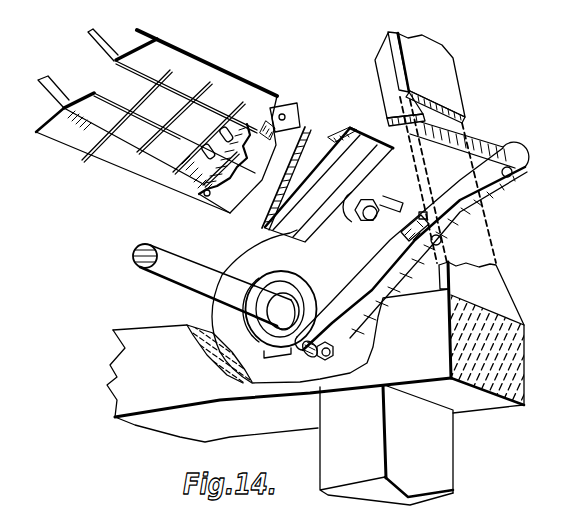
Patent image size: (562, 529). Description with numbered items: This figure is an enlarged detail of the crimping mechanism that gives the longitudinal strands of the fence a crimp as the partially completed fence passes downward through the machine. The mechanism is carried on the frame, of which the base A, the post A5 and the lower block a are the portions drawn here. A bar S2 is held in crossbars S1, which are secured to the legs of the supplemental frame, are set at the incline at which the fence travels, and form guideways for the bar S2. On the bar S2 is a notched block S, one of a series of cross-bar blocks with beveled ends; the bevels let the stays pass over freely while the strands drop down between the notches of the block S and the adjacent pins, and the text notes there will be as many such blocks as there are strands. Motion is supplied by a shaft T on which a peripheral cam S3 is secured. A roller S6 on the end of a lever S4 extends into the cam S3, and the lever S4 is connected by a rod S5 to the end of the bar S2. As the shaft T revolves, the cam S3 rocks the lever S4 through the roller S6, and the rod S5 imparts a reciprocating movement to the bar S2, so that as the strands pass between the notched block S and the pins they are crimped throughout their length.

The notched block S is at (57, 137).
The crossbars S1 is at (245, 81).
The bar S2 is at (156, 121).
The peripheral cam S3 is at (187, 153).
The lever S4 is at (457, 227).
The rod S5 is at (470, 141).
The roller S6 is at (423, 212).
The shaft T is at (170, 269).
The base rail A is at (315, 372).
The post A5 is at (495, 295).
The post lower block a is at (443, 468).